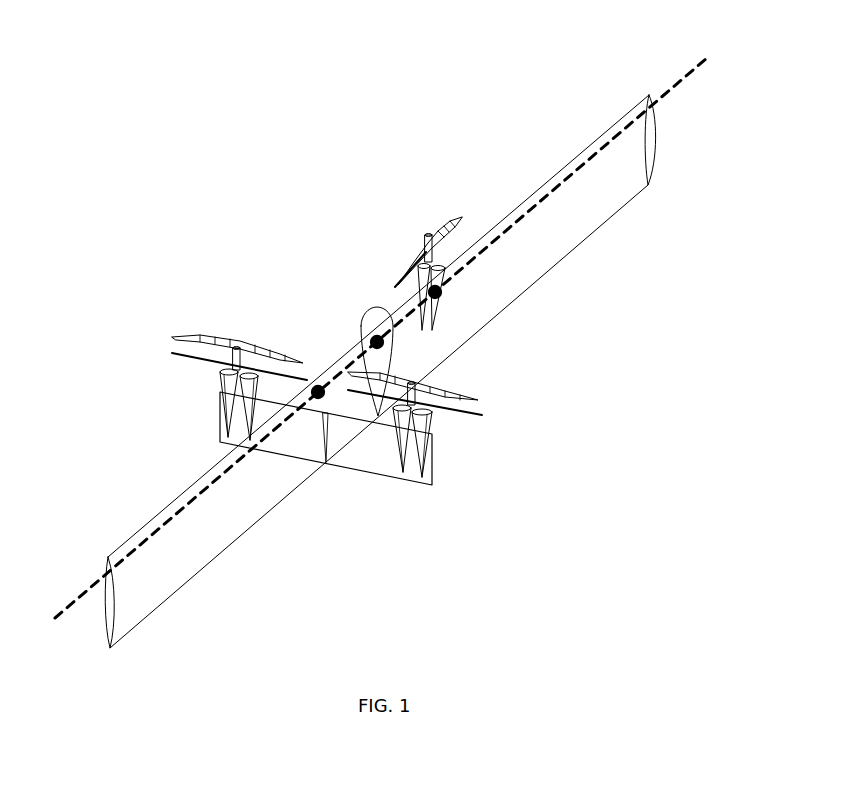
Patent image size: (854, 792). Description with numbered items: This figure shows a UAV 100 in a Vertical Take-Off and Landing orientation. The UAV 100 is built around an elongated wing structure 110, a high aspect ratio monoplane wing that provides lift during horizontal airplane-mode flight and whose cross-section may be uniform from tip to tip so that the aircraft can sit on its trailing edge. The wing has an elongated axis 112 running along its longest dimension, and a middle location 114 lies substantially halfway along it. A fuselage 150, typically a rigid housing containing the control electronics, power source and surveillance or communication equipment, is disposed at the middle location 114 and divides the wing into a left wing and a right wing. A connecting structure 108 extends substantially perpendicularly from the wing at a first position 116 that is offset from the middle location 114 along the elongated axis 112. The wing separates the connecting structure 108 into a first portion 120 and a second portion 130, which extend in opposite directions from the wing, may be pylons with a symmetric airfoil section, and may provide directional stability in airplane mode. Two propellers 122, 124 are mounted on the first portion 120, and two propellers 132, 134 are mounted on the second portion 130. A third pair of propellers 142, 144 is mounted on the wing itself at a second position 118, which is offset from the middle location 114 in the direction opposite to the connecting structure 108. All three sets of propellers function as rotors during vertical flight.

The UAV 100 is at (277, 87).
The connecting structure 108 is at (262, 410).
The elongated wing structure 110 is at (637, 185).
The elongated axis 112 is at (668, 94).
The middle location 114 is at (372, 337).
The first position 116 is at (313, 388).
The second position 118 is at (428, 290).
The first portion 120 is at (395, 468).
The propeller 122 is at (465, 415).
The propeller 124 is at (478, 400).
The second portion 130 is at (223, 435).
The propeller 132 is at (185, 355).
The propeller 134 is at (173, 337).
The propeller 142 is at (458, 233).
The propeller 144 is at (452, 220).
The fuselage 150 is at (376, 322).